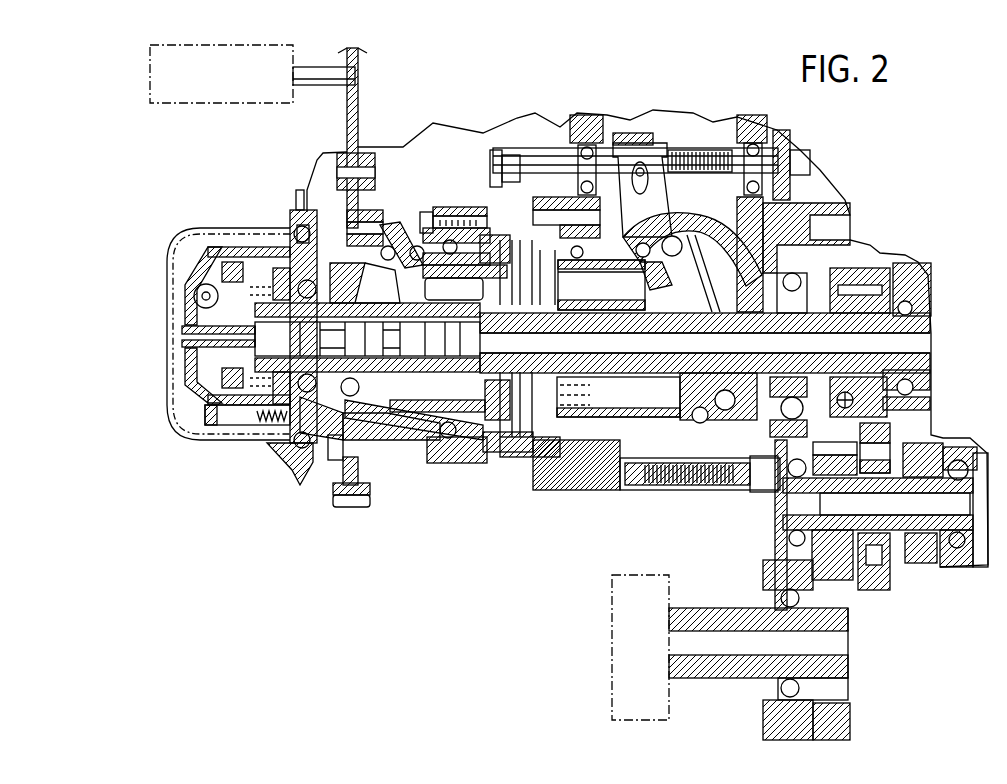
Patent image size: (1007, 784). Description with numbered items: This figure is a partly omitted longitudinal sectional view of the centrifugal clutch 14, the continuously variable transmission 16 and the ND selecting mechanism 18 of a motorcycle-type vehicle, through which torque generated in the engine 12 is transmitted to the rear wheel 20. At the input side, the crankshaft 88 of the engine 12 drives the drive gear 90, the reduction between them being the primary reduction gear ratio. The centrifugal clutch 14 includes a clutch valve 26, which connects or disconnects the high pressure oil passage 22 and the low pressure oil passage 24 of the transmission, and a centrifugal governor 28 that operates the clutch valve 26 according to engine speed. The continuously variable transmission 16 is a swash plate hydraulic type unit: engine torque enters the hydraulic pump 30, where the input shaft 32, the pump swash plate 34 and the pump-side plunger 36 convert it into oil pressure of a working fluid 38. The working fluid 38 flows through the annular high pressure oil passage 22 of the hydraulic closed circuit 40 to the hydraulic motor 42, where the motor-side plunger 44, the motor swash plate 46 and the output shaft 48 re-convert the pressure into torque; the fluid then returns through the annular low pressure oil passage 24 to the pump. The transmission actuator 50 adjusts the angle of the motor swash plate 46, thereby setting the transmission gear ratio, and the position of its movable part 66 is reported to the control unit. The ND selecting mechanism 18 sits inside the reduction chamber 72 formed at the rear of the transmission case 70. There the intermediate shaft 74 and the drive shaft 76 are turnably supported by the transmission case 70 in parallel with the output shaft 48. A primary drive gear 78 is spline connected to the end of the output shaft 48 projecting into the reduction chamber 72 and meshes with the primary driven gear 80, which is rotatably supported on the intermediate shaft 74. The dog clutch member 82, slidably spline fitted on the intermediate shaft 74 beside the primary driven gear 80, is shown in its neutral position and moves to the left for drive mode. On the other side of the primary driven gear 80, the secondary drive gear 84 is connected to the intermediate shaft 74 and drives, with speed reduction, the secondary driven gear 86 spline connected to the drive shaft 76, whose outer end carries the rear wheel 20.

The engine 12 is at (237, 107).
The centrifugal clutch 14 is at (417, 537).
The continuously variable transmission 16 is at (533, 515).
The ND selecting mechanism 18 is at (899, 438).
The rear wheel 20 is at (613, 638).
The high pressure oil passage 22 is at (570, 282).
The low pressure oil passage 24 is at (598, 392).
The clutch valve 26 is at (404, 392).
The centrifugal governor 28 is at (272, 445).
The hydraulic pump 30 is at (450, 205).
The input shaft 32 is at (222, 368).
The pump swash plate 34 is at (376, 264).
The pump-side plunger 36 is at (432, 440).
The working fluid 38 is at (503, 460).
The hydraulic closed circuit 40 is at (593, 227).
The hydraulic motor 42 is at (640, 483).
The motor-side plunger 44 is at (667, 400).
The motor swash plate 46 is at (692, 262).
The output shaft 48 is at (845, 205).
The transmission actuator 50 is at (667, 146).
The movable part 66 is at (642, 135).
The transmission case 70 is at (597, 488).
The reduction chamber 72 is at (873, 253).
The intermediate shaft 74 is at (953, 493).
The drive shaft 76 is at (713, 607).
The primary drive gear 78 is at (906, 256).
The primary driven gear 80 is at (873, 583).
The dog clutch member 82 is at (910, 563).
The secondary drive gear 84 is at (810, 558).
The secondary driven gear 86 is at (827, 688).
The crankshaft 88 is at (323, 86).
The drive gear 90 is at (358, 125).